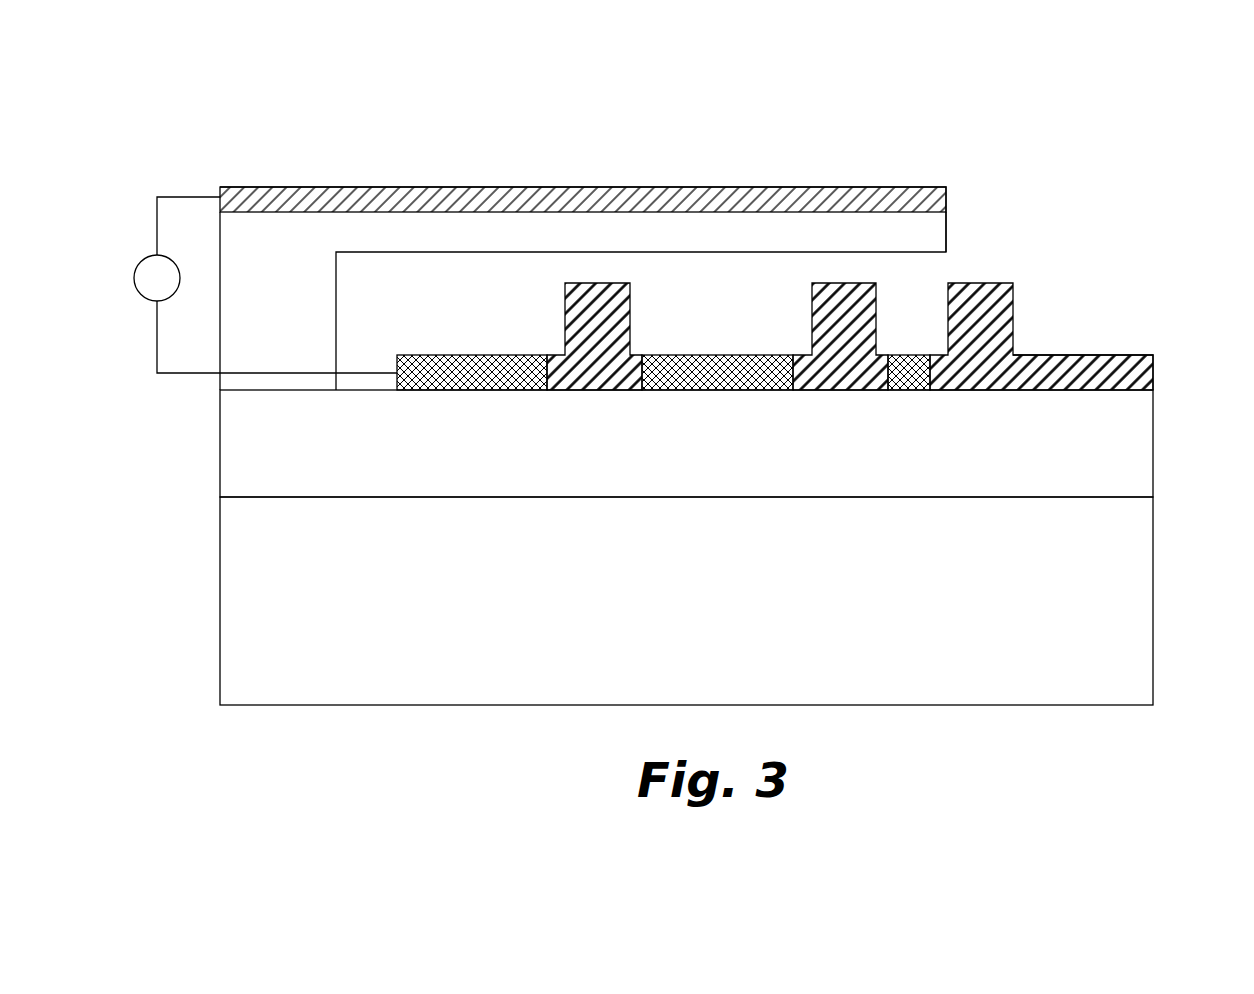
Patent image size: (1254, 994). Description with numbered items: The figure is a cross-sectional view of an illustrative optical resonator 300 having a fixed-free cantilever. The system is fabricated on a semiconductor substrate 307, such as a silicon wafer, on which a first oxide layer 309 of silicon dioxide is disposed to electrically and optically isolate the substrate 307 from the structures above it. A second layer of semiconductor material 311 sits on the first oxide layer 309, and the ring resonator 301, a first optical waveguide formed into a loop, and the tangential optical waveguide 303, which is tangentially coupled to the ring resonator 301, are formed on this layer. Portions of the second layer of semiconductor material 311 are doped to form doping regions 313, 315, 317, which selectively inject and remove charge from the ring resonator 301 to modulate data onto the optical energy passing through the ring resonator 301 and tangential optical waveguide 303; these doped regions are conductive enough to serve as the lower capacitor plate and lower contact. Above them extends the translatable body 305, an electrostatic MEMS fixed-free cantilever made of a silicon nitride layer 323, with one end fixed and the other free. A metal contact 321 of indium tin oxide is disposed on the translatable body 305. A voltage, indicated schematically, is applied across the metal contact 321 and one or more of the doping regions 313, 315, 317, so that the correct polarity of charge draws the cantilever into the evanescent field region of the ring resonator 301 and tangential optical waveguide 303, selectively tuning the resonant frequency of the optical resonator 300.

The optical resonator 300 is at (237, 82).
The ring resonator 301 is at (823, 300).
The tangential optical waveguide 303 is at (1005, 290).
The translatable body 305 is at (965, 210).
The semiconductor substrate 307 is at (1126, 618).
The first oxide layer 309 is at (1133, 448).
The second layer of semiconductor material 311 is at (1106, 360).
The doping region 313 is at (728, 362).
The doping region 315 is at (462, 360).
The doping region 317 is at (912, 365).
The metal contact 321 is at (848, 196).
The silicon nitride layer 323 is at (937, 236).